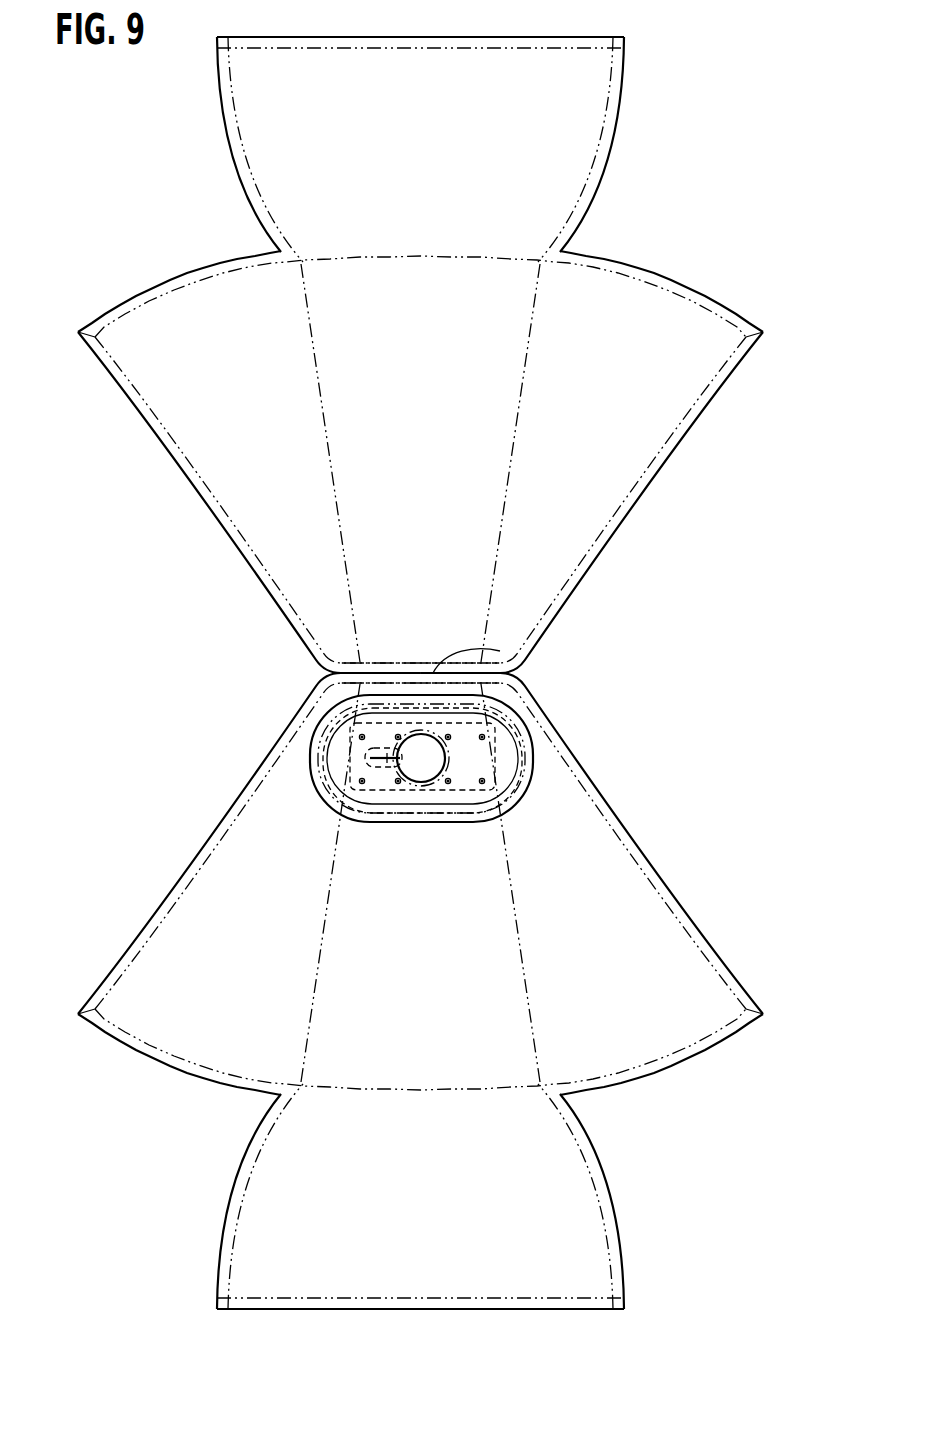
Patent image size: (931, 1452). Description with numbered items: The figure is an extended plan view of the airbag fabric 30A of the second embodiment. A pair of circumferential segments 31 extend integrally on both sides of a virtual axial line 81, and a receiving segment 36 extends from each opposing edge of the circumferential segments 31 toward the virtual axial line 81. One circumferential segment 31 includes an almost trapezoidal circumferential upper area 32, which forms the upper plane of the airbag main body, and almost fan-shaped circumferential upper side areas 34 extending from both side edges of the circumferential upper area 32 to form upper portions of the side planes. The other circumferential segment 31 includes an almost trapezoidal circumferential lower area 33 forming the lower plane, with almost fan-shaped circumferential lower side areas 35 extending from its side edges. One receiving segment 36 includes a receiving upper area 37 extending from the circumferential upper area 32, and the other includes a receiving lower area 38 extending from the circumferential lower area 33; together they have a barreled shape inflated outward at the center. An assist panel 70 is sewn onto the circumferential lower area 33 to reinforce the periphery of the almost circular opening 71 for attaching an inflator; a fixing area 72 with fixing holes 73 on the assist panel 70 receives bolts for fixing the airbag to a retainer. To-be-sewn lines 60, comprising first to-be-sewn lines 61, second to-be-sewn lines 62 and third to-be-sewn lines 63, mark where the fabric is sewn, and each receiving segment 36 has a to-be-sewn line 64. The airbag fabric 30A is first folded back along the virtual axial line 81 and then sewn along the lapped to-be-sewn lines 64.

The airbag fabric 30A is at (78, 243).
The circumferential segment 31 is at (792, 283).
The circumferential upper area 32 is at (436, 425).
The circumferential lower area 33 is at (439, 982).
The circumferential upper side area 34 is at (269, 425).
The circumferential lower side area 35 is at (244, 982).
The receiving segment 36 is at (792, 33).
The receiving upper area 37 is at (436, 157).
The receiving lower area 38 is at (439, 1212).
The to-be-sewn lines 60 is at (471, 693).
The first to-be-sewn line 61 is at (633, 498).
The second to-be-sewn line 62 is at (178, 284).
The third to-be-sewn line 63 is at (233, 129).
The to-be-sewn line 64 is at (472, 50).
The assist panel 70 is at (352, 812).
The opening 71 is at (422, 768).
The fixing area 72 is at (453, 792).
The fixing holes 73 is at (482, 781).
The virtual axial line 81 is at (500, 651).